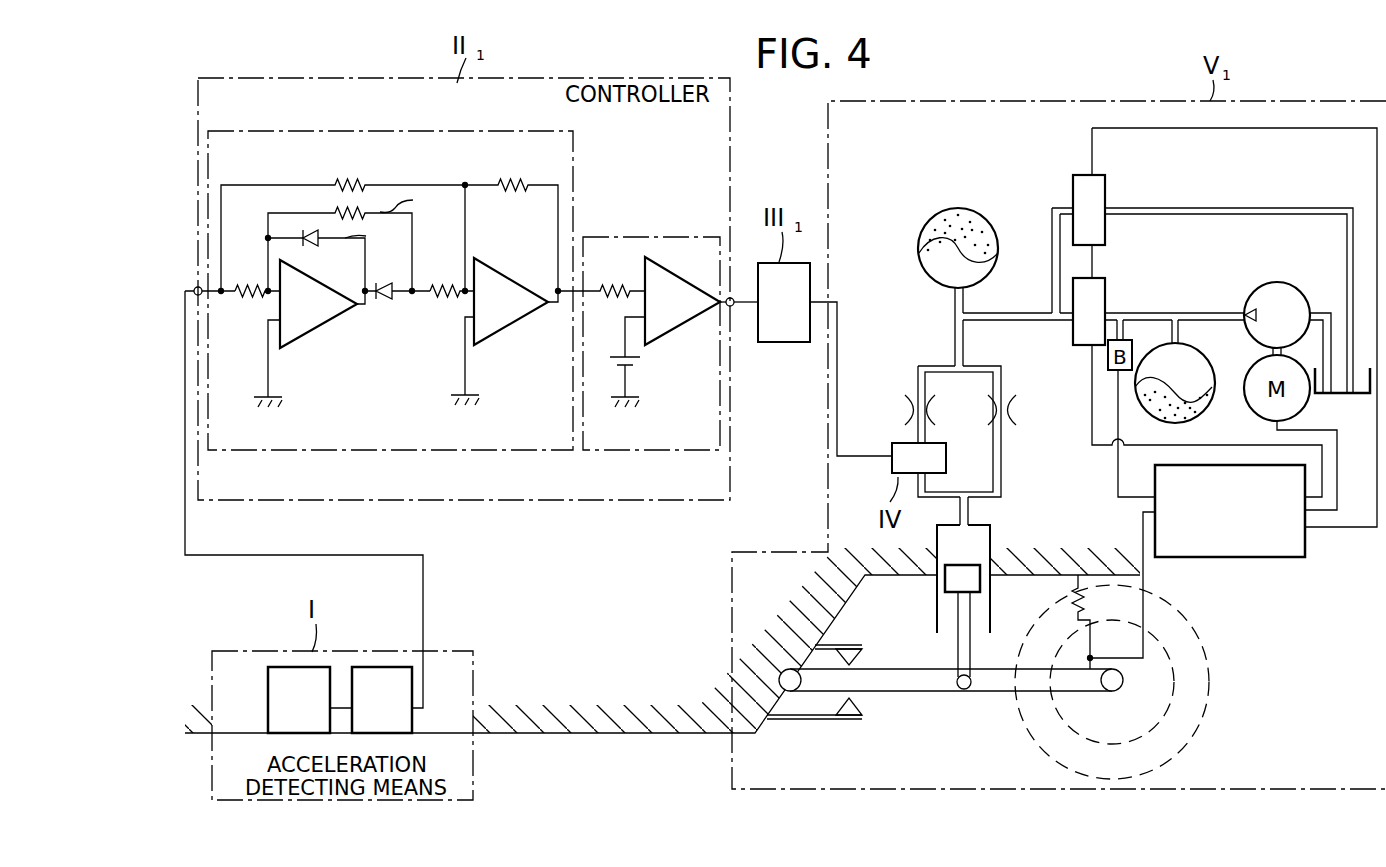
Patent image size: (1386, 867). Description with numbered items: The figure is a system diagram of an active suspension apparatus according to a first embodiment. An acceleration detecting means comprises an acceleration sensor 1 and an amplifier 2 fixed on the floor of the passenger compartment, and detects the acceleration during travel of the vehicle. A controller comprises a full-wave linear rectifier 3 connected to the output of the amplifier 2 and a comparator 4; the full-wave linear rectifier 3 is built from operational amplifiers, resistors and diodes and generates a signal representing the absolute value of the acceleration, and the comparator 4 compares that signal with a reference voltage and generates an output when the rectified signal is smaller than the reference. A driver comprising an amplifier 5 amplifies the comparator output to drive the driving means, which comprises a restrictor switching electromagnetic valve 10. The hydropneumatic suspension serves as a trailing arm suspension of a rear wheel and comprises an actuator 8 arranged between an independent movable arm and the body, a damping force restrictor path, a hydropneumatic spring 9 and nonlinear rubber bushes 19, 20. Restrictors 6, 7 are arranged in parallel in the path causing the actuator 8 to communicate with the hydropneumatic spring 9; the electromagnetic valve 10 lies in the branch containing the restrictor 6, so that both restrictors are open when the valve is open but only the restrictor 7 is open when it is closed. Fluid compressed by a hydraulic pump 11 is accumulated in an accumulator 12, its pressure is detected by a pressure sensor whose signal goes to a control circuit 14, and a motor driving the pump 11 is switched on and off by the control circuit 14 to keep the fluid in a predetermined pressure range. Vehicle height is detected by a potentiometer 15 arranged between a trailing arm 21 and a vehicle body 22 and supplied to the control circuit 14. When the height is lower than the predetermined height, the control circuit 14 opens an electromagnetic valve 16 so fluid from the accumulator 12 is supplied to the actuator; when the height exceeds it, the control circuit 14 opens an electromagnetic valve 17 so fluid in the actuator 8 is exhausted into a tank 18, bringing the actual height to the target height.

The acceleration sensor 1 is at (299, 700).
The amplifier 2 is at (382, 700).
The full-wave linear rectifier 3 is at (386, 134).
The comparator 4 is at (645, 237).
The amplifier 5 is at (784, 302).
The restrictor 6 is at (903, 412).
The restrictor 7 is at (1018, 410).
The actuator 8 is at (990, 530).
The hydropneumatic spring 9 is at (958, 208).
The restrictor switching electromagnetic valve 10 is at (919, 458).
The hydraulic pump 11 is at (1290, 284).
The accumulator 12 is at (1204, 353).
The control circuit 14 is at (1258, 557).
The potentiometer 15 is at (1095, 608).
The electromagnetic valve 16 is at (1105, 280).
The electromagnetic valve 17 is at (1105, 178).
The tank 18 is at (1342, 398).
The nonlinear rubber bush 19 is at (862, 661).
The nonlinear rubber bush 20 is at (864, 718).
The trailing arm 21 is at (948, 693).
The vehicle body 22 is at (692, 703).